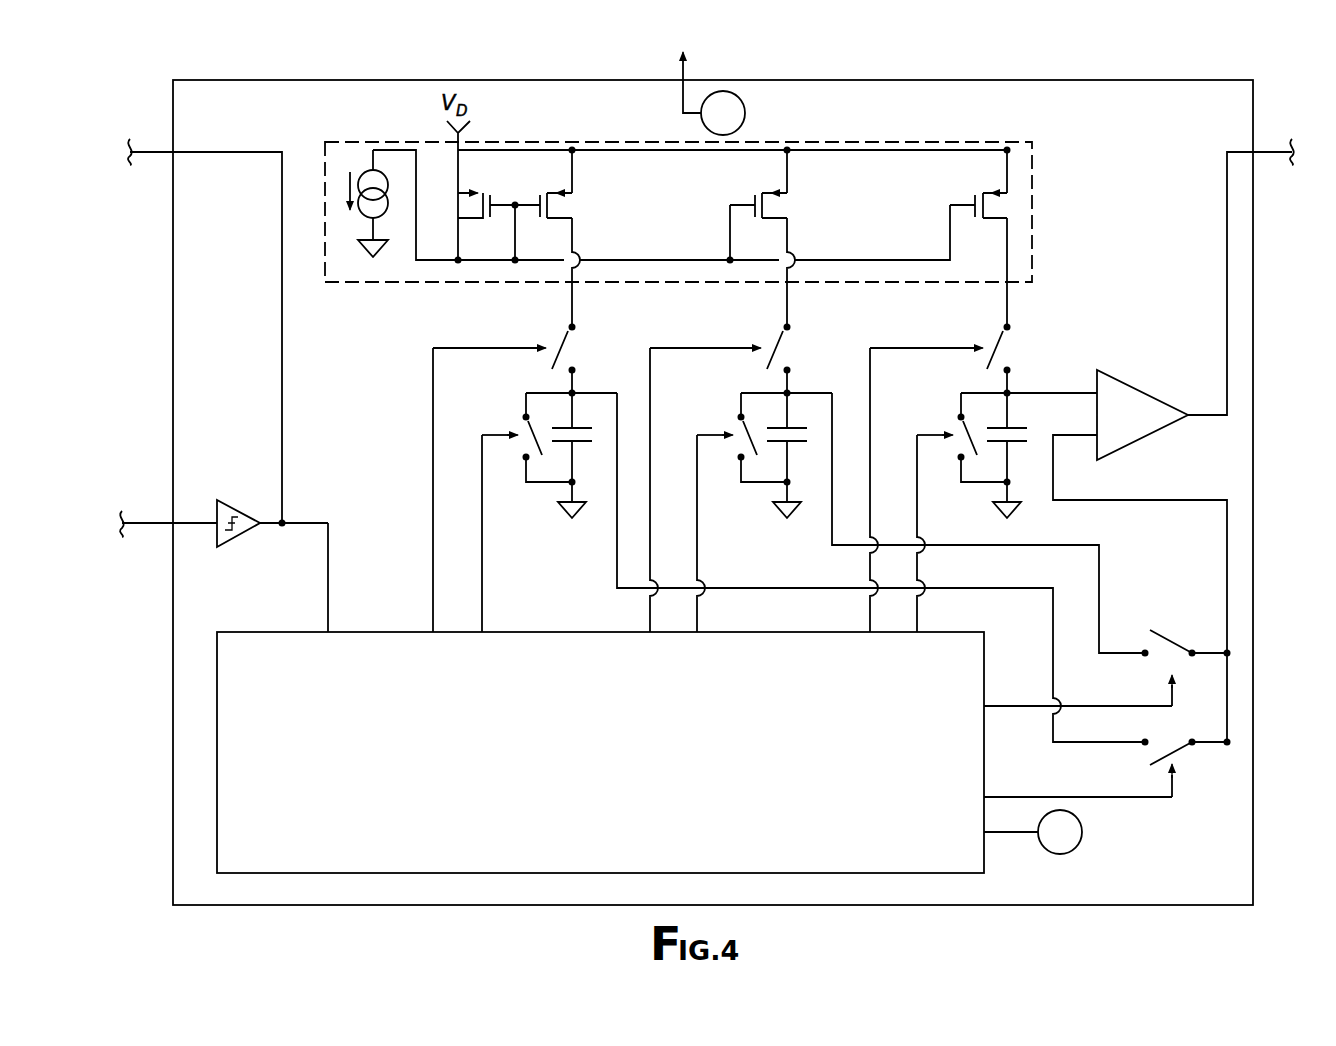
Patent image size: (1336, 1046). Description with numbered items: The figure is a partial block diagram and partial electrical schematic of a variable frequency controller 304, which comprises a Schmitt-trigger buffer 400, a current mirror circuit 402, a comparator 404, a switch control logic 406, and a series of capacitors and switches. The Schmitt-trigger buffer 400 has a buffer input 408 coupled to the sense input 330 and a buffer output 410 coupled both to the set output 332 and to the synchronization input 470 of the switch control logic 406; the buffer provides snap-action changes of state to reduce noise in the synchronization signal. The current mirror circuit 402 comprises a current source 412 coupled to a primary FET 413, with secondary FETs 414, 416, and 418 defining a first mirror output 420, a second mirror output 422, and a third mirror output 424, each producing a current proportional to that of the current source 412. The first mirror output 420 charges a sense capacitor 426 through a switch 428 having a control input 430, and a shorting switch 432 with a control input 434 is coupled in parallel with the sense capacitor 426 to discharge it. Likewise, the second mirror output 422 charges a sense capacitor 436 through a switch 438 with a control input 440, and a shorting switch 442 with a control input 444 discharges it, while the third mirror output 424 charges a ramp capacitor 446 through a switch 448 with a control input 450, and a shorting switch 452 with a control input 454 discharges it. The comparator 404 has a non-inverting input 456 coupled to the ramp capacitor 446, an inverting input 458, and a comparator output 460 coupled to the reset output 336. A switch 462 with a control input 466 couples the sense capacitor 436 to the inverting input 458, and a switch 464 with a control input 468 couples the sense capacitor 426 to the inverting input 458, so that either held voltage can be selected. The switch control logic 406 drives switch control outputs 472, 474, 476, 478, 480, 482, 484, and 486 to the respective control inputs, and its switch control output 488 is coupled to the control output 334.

The variable frequency controller 304 is at (145, 90).
The sense input 330 is at (172, 523).
The set output 332 is at (170, 153).
The control output 334 is at (688, 78).
The reset output 336 is at (1255, 152).
The Schmitt-trigger buffer 400 is at (247, 490).
The current mirror circuit 402 is at (1033, 170).
The comparator 404 is at (1143, 377).
The switch control logic 406 is at (581, 791).
The buffer input 408 is at (213, 523).
The buffer output 410 is at (267, 523).
The current source 412 is at (352, 237).
The primary FET 413 is at (453, 216).
The secondary FET 414 is at (570, 203).
The secondary FET 416 is at (792, 206).
The secondary FET 418 is at (1010, 205).
The first mirror output 420 is at (572, 284).
The second mirror output 422 is at (787, 284).
The third mirror output 424 is at (1005, 290).
The sense capacitor 426 is at (582, 416).
The electrically-controlled switch 428 is at (578, 352).
The control input 430 is at (517, 347).
The shorting switch 432 is at (513, 412).
The control input 434 is at (504, 435).
The sense capacitor 436 is at (798, 416).
The electrically-controlled switch 438 is at (793, 352).
The control input 440 is at (732, 347).
The shorting switch 442 is at (728, 412).
The control input 444 is at (719, 435).
The ramp capacitor 446 is at (1019, 416).
The electrically-controlled switch 448 is at (1017, 345).
The control input 450 is at (946, 347).
The shorting switch 452 is at (948, 410).
The control input 454 is at (933, 435).
The non-inverting input 456 is at (1097, 393).
The inverting input 458 is at (1097, 435).
The comparator output 460 is at (1190, 415).
The electrically-controlled switch 462 is at (1167, 618).
The electrically-controlled switch 464 is at (1191, 759).
The control input 466 is at (1150, 706).
The control input 468 is at (1103, 797).
The synchronization input 470 is at (328, 632).
The switch control output 472 is at (433, 632).
The switch control output 474 is at (482, 632).
The switch control output 476 is at (650, 632).
The switch control output 478 is at (697, 632).
The switch control output 480 is at (868, 632).
The switch control output 482 is at (920, 632).
The switch control output 484 is at (990, 706).
The switch control output 486 is at (985, 797).
The switch control output 488 is at (990, 832).